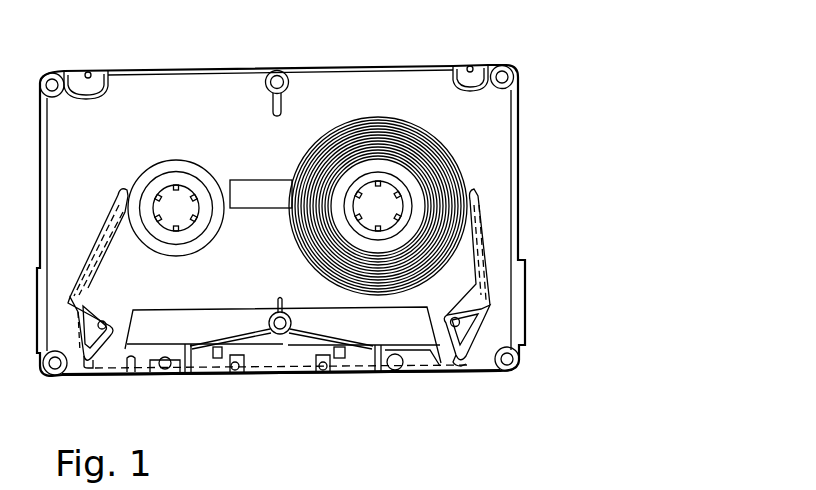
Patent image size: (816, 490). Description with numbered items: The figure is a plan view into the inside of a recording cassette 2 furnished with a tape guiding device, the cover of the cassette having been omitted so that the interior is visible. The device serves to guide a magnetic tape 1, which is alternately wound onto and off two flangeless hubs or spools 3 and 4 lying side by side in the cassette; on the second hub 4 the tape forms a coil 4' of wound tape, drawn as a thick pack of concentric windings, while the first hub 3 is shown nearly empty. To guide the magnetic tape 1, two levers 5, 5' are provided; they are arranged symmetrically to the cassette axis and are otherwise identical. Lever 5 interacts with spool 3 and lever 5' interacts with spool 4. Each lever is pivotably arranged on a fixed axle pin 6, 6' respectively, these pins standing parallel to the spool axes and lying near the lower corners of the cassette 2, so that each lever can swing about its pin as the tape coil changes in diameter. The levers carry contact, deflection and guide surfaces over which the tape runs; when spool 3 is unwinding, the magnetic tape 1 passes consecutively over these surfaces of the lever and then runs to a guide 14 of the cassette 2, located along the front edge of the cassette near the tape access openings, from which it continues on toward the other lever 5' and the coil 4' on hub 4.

The magnetic tape 1 is at (82, 300).
The recording cassette 2 is at (410, 88).
The hub 3 is at (182, 180).
The hub 4 is at (366, 173).
The coil 4' is at (380, 199).
The lever 5 is at (65, 243).
The lever 5' is at (505, 252).
The axle pin 6 is at (57, 332).
The axle pin 6' is at (482, 361).
The guide 14 is at (133, 362).